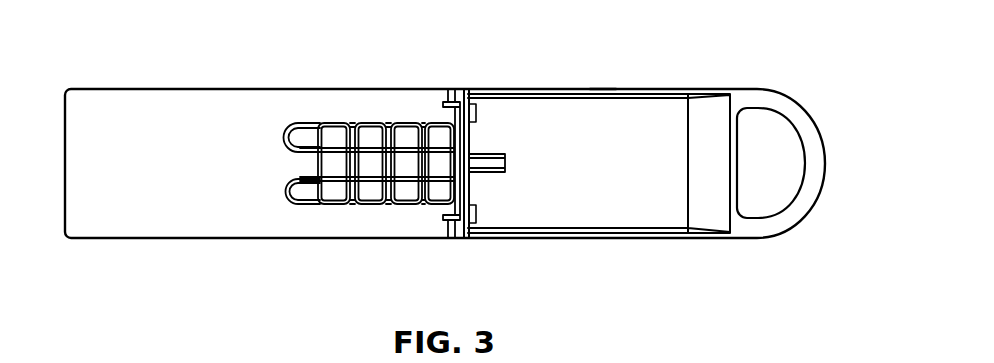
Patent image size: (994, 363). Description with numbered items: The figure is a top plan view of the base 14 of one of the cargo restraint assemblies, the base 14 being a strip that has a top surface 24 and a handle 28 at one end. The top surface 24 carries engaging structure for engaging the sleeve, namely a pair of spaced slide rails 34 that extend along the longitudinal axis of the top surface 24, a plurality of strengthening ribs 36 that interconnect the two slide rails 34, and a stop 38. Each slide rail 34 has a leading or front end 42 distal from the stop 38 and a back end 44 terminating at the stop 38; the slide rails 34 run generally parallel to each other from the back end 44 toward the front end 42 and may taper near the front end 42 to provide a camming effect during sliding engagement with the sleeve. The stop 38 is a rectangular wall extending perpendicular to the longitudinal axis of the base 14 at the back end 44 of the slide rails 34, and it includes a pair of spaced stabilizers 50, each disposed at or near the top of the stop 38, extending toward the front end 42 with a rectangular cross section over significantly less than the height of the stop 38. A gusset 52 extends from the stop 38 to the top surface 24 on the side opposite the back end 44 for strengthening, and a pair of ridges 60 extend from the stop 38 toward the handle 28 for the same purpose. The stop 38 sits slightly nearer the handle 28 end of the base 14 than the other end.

The base 14 is at (597, 74).
The top surface 24 is at (218, 108).
The handle 28 is at (812, 120).
The slide rails 34 is at (372, 121).
The strengthening ribs 36 is at (328, 122).
The stop 38 is at (477, 96).
The front end 42 is at (285, 185).
The back end 44 is at (469, 125).
The stabilizers 50 is at (450, 96).
The gusset 52 is at (498, 163).
The ridges 60 is at (658, 89).